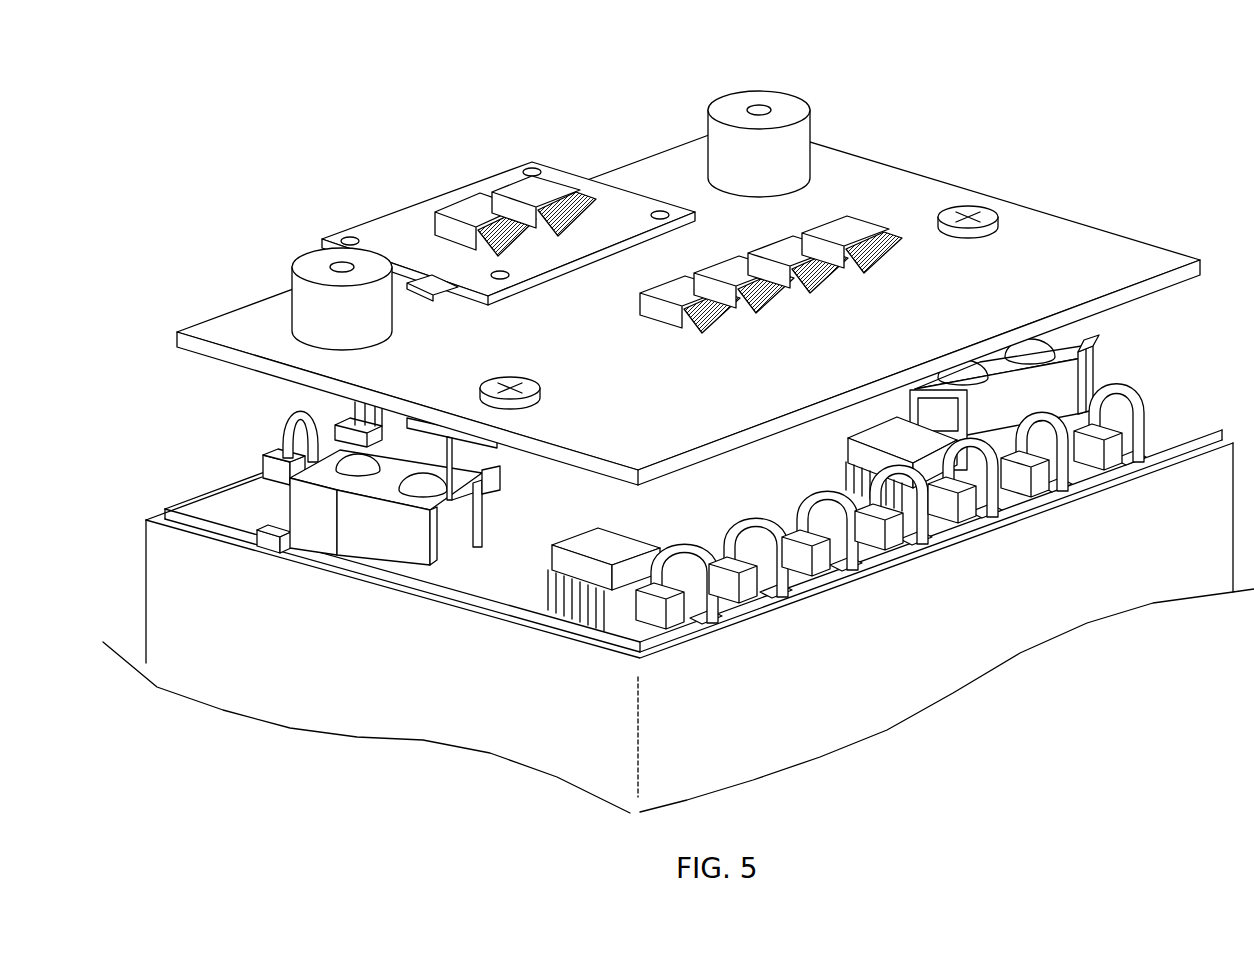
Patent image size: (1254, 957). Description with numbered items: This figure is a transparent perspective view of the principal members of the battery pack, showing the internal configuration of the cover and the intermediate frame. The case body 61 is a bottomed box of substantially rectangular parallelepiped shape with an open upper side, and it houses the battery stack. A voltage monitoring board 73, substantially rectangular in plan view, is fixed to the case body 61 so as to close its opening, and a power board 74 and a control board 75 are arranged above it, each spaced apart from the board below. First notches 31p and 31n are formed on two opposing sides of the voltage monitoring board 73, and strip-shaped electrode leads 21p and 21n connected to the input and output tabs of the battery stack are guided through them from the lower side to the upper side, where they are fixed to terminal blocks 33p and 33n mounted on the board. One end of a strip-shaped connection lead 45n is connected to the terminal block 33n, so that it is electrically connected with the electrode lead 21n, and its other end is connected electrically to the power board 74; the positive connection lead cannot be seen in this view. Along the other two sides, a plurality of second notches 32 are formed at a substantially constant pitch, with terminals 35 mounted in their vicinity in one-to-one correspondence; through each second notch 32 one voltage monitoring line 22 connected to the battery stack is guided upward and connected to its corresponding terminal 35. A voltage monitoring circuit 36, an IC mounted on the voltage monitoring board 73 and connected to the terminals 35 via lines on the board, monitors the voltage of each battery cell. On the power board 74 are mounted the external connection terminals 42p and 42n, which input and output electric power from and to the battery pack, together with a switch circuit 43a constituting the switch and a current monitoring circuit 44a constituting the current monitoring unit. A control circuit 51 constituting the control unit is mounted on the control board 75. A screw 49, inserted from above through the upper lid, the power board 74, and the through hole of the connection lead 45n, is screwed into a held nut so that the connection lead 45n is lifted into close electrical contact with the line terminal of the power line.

The case body 61 is at (142, 610).
The voltage monitoring board 73 is at (223, 490).
The power board 74 is at (255, 322).
The control board 75 is at (387, 227).
The negative electrode lead 21n is at (313, 523).
The positive electrode lead 21p is at (1062, 348).
The voltage monitoring line 22 is at (285, 425).
The first notch 31n is at (273, 545).
The first notch 31p is at (1143, 395).
The second notch 32 is at (733, 632).
The terminal block 33n is at (402, 540).
The terminal block 33p is at (1057, 387).
The terminal 35 is at (270, 468).
The voltage monitoring circuit 36 is at (855, 436).
The external connection terminal 42n is at (313, 260).
The external connection terminal 42p is at (728, 107).
The switch circuit 43a is at (413, 290).
The current monitoring circuit 44a is at (677, 290).
The connection lead 45n is at (482, 473).
The screw 49 is at (530, 382).
The control circuit 51 is at (472, 207).